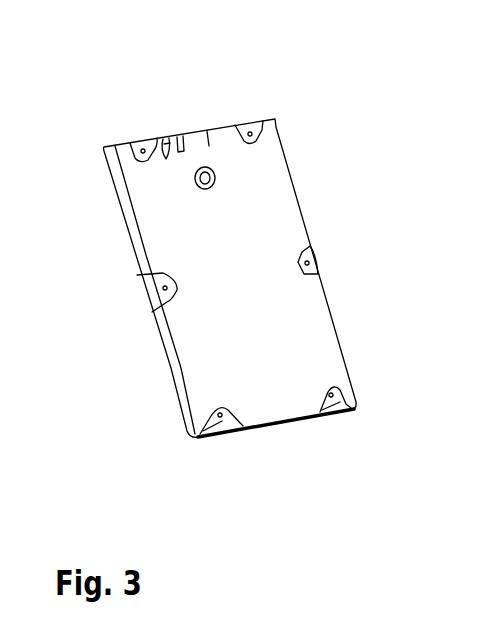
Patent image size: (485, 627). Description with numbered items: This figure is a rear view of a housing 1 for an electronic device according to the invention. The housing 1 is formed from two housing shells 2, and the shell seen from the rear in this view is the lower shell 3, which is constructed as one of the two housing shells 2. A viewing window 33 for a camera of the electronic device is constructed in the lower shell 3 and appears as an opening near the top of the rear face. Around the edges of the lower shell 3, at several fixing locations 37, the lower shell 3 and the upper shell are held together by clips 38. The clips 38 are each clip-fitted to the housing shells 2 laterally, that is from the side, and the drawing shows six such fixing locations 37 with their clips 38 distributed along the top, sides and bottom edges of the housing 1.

The housing 1 is at (175, 106).
The housing shells 2 is at (342, 381).
The lower shell 3 is at (323, 339).
The viewing window 33 is at (216, 178).
The fixing locations 37 is at (140, 134).
The clips 38 is at (245, 121).